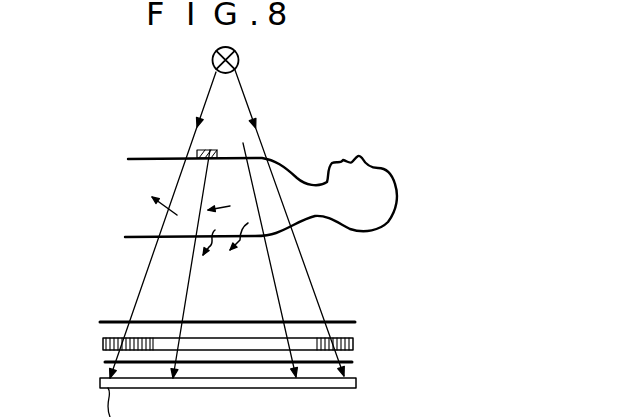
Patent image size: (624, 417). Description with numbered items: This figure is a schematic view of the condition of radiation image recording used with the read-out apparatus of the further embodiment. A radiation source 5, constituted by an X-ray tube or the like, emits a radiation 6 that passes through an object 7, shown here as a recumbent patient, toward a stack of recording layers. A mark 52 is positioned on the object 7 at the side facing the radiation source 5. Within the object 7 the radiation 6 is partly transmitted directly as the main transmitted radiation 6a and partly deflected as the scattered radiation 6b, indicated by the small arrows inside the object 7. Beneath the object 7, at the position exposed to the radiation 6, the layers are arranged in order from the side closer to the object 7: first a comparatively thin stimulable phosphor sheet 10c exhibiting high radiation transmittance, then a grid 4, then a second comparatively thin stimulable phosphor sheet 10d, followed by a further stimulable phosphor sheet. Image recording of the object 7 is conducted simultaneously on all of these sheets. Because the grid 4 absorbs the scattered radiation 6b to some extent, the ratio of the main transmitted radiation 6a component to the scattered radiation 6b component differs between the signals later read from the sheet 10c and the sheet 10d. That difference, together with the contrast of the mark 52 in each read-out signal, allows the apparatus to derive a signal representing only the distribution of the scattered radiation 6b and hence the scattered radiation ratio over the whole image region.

The radiation source 5 is at (239, 60).
The radiation 6 is at (247, 99).
The main transmitted radiation 6a is at (273, 290).
The scattered radiation 6b is at (245, 242).
The object 7 is at (153, 162).
The mark 52 is at (201, 150).
The stimulable phosphor sheet 10c is at (110, 322).
The grid 4 is at (103, 339).
The stimulable phosphor sheet 10d is at (106, 364).